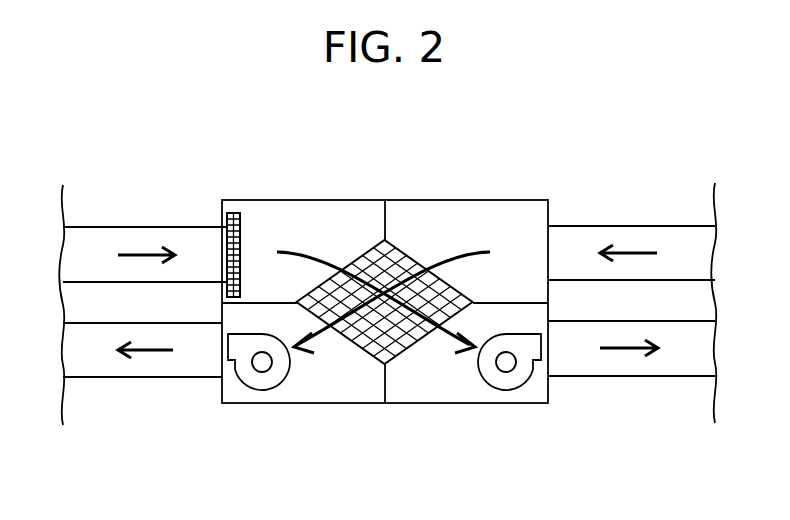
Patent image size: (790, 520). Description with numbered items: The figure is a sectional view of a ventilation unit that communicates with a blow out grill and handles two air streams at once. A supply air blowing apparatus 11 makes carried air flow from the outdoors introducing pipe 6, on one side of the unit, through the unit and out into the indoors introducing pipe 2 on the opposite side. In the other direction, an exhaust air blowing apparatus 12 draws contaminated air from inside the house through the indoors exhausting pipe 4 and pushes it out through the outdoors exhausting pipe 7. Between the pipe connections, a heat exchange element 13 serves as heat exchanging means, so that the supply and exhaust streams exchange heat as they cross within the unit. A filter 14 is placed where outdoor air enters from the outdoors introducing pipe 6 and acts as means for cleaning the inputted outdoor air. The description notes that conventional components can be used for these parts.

The indoors introducing pipe 2 is at (582, 348).
The indoors exhausting pipe 4 is at (577, 253).
The outdoors introducing pipe 6 is at (88, 258).
The outdoors exhausting pipe 7 is at (93, 347).
The supply air blowing apparatus 11 is at (497, 374).
The exhaust air blowing apparatus 12 is at (251, 374).
The heat exchange element 13 is at (415, 240).
The filter 14 is at (238, 244).